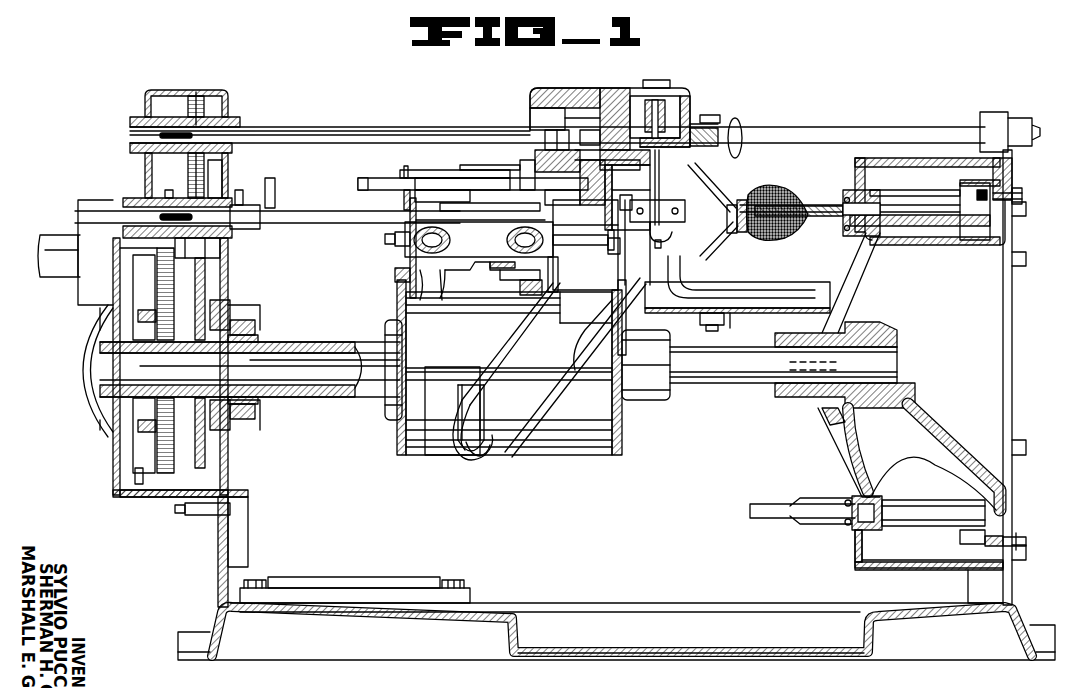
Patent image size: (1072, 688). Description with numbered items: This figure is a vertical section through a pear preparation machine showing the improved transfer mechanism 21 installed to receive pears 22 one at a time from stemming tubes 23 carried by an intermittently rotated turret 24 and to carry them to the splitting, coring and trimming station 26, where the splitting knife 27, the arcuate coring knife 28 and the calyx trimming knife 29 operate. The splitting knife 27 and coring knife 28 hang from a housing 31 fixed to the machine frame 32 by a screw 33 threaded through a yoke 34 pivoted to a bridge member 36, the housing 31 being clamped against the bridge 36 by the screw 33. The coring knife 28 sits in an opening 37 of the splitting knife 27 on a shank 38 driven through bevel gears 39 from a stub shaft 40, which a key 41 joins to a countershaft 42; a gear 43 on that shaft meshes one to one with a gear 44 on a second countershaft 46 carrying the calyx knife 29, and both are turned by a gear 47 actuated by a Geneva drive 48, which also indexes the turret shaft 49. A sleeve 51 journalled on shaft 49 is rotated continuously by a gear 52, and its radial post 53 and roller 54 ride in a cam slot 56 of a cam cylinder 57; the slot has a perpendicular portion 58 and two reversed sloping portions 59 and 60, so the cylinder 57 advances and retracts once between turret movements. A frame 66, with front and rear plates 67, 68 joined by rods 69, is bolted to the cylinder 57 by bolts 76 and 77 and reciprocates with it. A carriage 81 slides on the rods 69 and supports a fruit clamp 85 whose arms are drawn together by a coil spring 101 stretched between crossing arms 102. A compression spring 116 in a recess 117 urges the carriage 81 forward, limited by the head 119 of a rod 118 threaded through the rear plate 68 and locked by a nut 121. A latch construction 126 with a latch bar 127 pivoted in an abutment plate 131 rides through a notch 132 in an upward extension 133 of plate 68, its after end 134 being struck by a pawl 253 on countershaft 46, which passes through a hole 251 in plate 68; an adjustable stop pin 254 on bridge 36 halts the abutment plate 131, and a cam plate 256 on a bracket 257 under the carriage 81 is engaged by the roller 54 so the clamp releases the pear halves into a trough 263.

The transfer mechanism 21 is at (478, 178).
The pear 22 is at (770, 195).
The stemming tube 23 is at (835, 215).
The turret 24 is at (828, 331).
The splitting, coring and trimming station 26 is at (690, 197).
The splitting knife 27 is at (700, 258).
The coring knife 28 is at (670, 218).
The calyx trimming knife 29 is at (640, 205).
The housing 31 is at (688, 112).
The frame 32 is at (405, 124).
The screw 33 is at (742, 122).
The yoke 34 is at (705, 125).
The bridge member 36 is at (575, 95).
The opening 37 is at (665, 225).
The shank 38 is at (659, 200).
The bevel gears 39 is at (655, 125).
The stub shaft 40 is at (616, 130).
The key 41 is at (590, 135).
The countershaft 42 is at (318, 135).
The gear 43 is at (205, 108).
The gear 44 is at (193, 183).
The countershaft 46 is at (308, 222).
The gear 47 is at (250, 286).
The Geneva drive 48 is at (150, 300).
The shaft 49 is at (740, 378).
The sleeve 51 is at (325, 395).
The gear 52 is at (270, 300).
The post 53 is at (508, 365).
The roller 54 is at (470, 412).
The cam slot 56 is at (522, 430).
The cam cylinder 57 is at (570, 420).
The portion of cam slot 58 is at (598, 330).
The sloping portion 59 is at (605, 384).
The sloping portion 60 is at (492, 460).
The frame 66 is at (425, 290).
The front end plate 67 is at (663, 278).
The rear end plate 68 is at (395, 273).
The rods 69 is at (572, 240).
The bolt 76 is at (636, 320).
The bolt 77 is at (400, 286).
The carriage 81 is at (479, 239).
The fruit clamp 85 is at (733, 232).
The coil spring 101 is at (490, 280).
The arms 102 is at (470, 270).
The coil spring 116 is at (410, 255).
The recess 117 is at (398, 233).
The rod 118 is at (565, 270).
The head 119 is at (612, 256).
The lock nut 121 is at (385, 240).
The latch construction 126 is at (400, 172).
The latch bar 127 is at (372, 180).
The abutment plate 131 is at (580, 172).
The notch 132 is at (406, 166).
The upward extension 133 is at (404, 202).
The after end of latch bar 134 is at (358, 185).
The hole 251 is at (418, 224).
The pawl 253 is at (270, 178).
The stop pin 254 is at (535, 160).
The cam plate 256 is at (545, 292).
The bracket 257 is at (530, 290).
The trough 263 is at (740, 316).